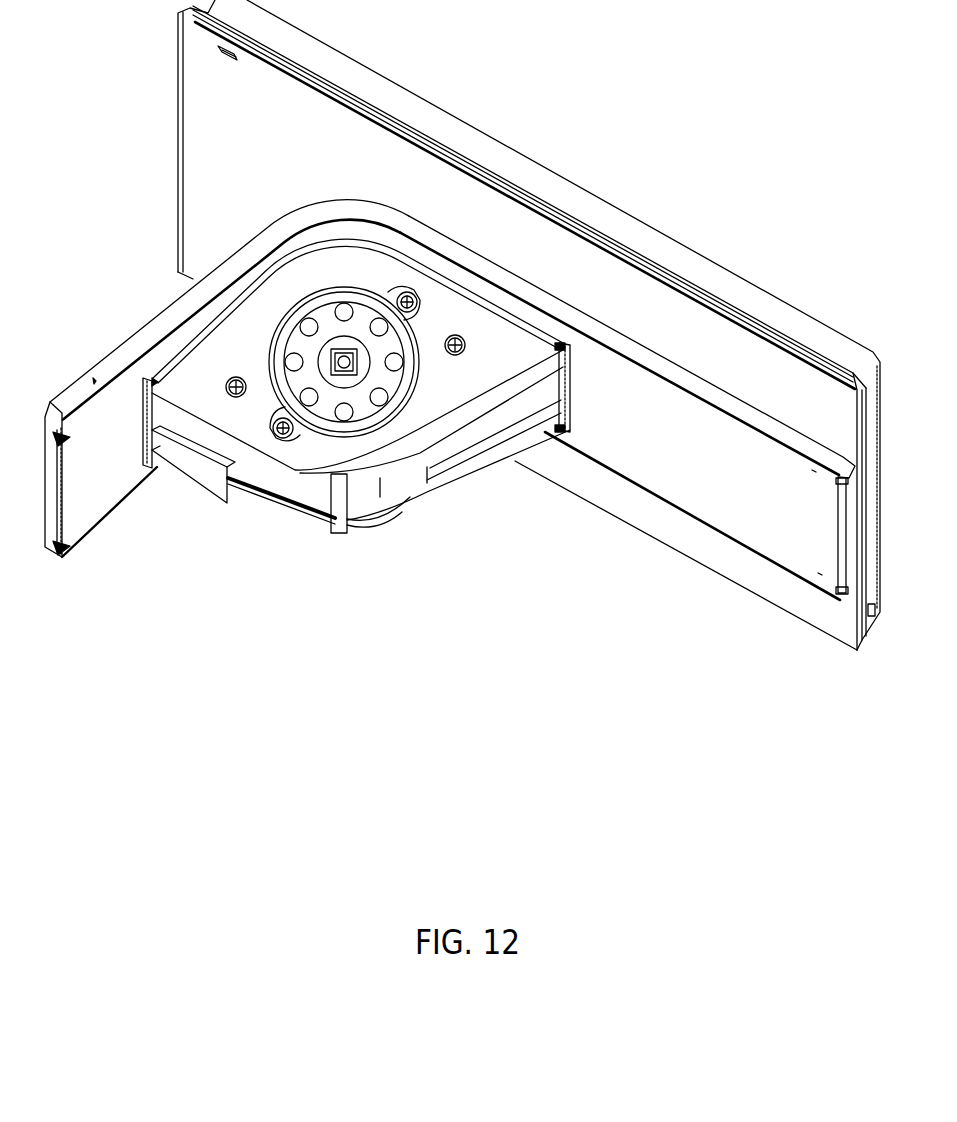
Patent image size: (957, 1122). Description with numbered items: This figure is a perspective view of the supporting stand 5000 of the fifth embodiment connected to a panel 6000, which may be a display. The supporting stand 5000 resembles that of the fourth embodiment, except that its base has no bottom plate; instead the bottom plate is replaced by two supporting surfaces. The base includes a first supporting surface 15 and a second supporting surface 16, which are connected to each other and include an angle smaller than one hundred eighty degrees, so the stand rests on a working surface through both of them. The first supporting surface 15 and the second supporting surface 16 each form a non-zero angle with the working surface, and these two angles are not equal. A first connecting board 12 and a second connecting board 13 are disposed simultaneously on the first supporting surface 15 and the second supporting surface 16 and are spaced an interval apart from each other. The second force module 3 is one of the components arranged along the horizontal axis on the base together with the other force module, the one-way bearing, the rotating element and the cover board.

The panel 6000 is at (424, 195).
The second supporting surface 16 is at (672, 473).
The first supporting surface 15 is at (178, 320).
The second connecting board 13 is at (190, 385).
The first connecting board 12 is at (188, 438).
The second force module 3 is at (327, 390).
The supporting stand 5000 is at (322, 474).